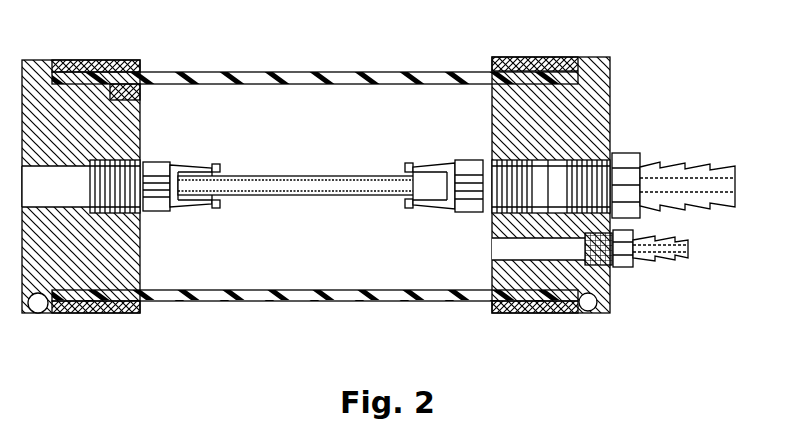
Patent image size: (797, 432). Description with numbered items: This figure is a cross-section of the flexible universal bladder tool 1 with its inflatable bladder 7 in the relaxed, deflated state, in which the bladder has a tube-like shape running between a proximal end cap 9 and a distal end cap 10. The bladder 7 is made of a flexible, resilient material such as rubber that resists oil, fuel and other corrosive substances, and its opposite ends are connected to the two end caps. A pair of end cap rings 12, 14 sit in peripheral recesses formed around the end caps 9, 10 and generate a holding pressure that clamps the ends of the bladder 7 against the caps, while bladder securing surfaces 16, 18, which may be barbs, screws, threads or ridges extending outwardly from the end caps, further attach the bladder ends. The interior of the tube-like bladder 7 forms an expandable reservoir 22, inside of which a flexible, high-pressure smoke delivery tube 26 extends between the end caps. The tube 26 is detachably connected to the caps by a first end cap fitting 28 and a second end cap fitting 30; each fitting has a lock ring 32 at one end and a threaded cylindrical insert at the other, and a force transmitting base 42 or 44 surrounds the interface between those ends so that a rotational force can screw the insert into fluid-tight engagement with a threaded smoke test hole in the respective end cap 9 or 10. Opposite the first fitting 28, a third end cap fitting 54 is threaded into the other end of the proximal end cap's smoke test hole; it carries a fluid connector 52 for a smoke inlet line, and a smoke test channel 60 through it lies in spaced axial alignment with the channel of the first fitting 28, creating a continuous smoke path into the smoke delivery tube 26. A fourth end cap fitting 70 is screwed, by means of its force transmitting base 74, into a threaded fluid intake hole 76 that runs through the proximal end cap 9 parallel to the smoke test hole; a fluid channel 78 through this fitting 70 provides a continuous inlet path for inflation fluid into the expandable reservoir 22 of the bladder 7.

The flexible bladder tool 1 is at (377, 181).
The inflatable bladder 7 is at (404, 68).
The proximal end cap 9 is at (549, 204).
The distal end cap 10 is at (96, 184).
The end cap ring 12 is at (522, 313).
The end cap ring 14 is at (108, 60).
The bladder securing surface 16 is at (492, 272).
The bladder securing surface 18 is at (135, 118).
The expandable reservoir 22 is at (320, 262).
The smoke delivery tube 26 is at (284, 176).
The first end cap fitting 28 is at (447, 160).
The second end cap fitting 30 is at (172, 160).
The lock ring 32 is at (217, 208).
The force transmitting base 42 is at (470, 212).
The force transmitting base 44 is at (157, 211).
The fluid connector 52 is at (687, 187).
The third end cap fitting 54 is at (673, 168).
The smoke test channel 60 is at (704, 187).
The fourth end cap fitting 70 is at (625, 272).
The force transmitting base 74 is at (677, 272).
The threaded fluid intake hole 76 is at (500, 250).
The fluid channel 78 is at (672, 253).